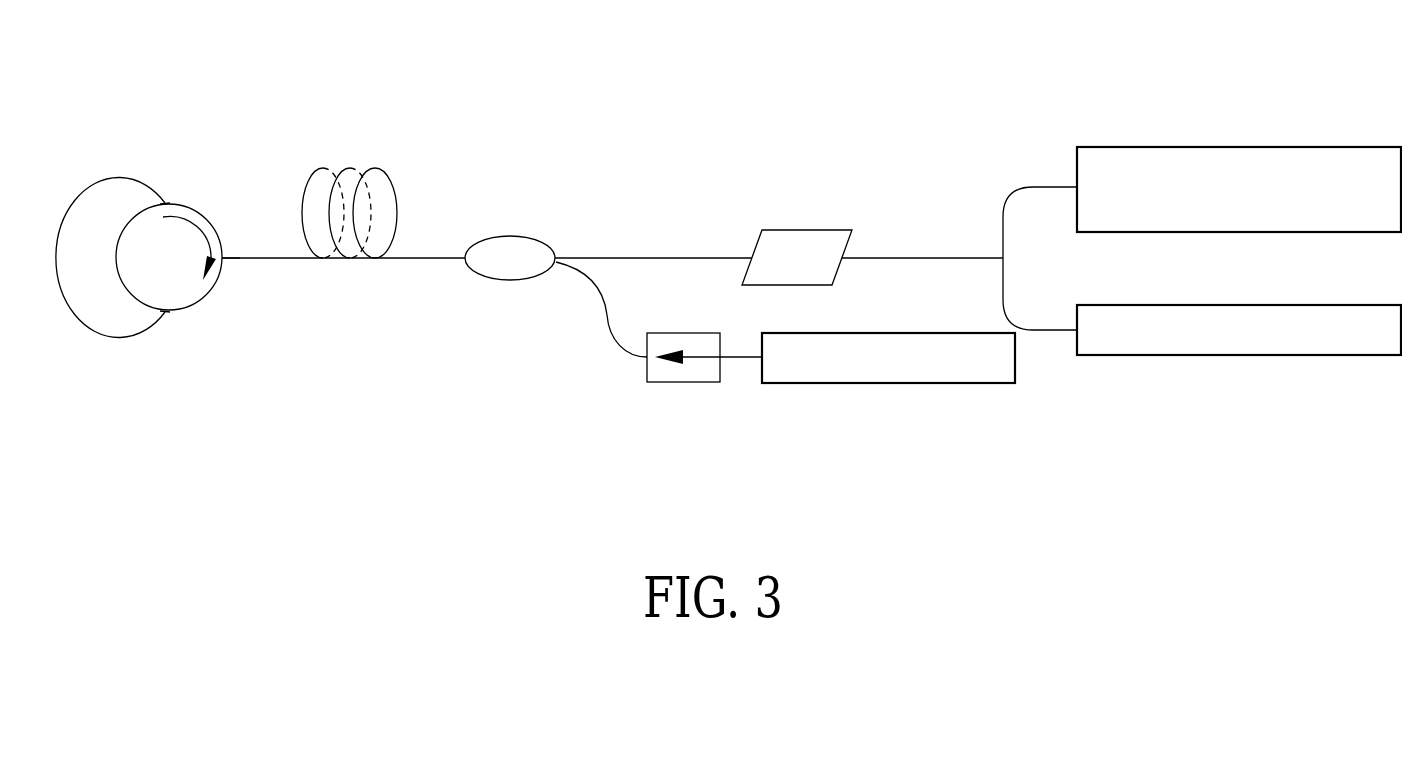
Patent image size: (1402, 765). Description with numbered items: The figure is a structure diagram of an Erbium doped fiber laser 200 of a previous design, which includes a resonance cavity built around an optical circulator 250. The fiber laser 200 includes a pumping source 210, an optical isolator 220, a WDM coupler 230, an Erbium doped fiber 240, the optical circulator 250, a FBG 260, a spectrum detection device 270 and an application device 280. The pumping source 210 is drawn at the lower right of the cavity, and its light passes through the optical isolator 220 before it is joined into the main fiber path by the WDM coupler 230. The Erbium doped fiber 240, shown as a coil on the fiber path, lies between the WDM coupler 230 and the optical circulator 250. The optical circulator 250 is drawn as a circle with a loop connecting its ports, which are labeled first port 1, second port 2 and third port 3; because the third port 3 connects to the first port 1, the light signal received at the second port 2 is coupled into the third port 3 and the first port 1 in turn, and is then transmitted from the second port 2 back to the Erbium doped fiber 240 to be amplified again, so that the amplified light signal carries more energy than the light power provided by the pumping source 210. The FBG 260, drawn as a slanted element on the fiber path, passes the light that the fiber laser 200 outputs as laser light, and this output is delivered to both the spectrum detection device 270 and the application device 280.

The fiber laser 200 is at (188, 33).
The pumping source 210 is at (887, 383).
The optical isolator 220 is at (683, 383).
The WDM coupler 230 is at (510, 236).
The Erbium doped fiber 240 is at (350, 167).
The optical circulator 250 is at (197, 207).
The FBG 260 is at (805, 229).
The spectrum detection device 270 is at (1237, 147).
The application device 280 is at (1237, 355).
The first port 1 is at (171, 186).
The second port 2 is at (245, 240).
The third port 3 is at (169, 330).